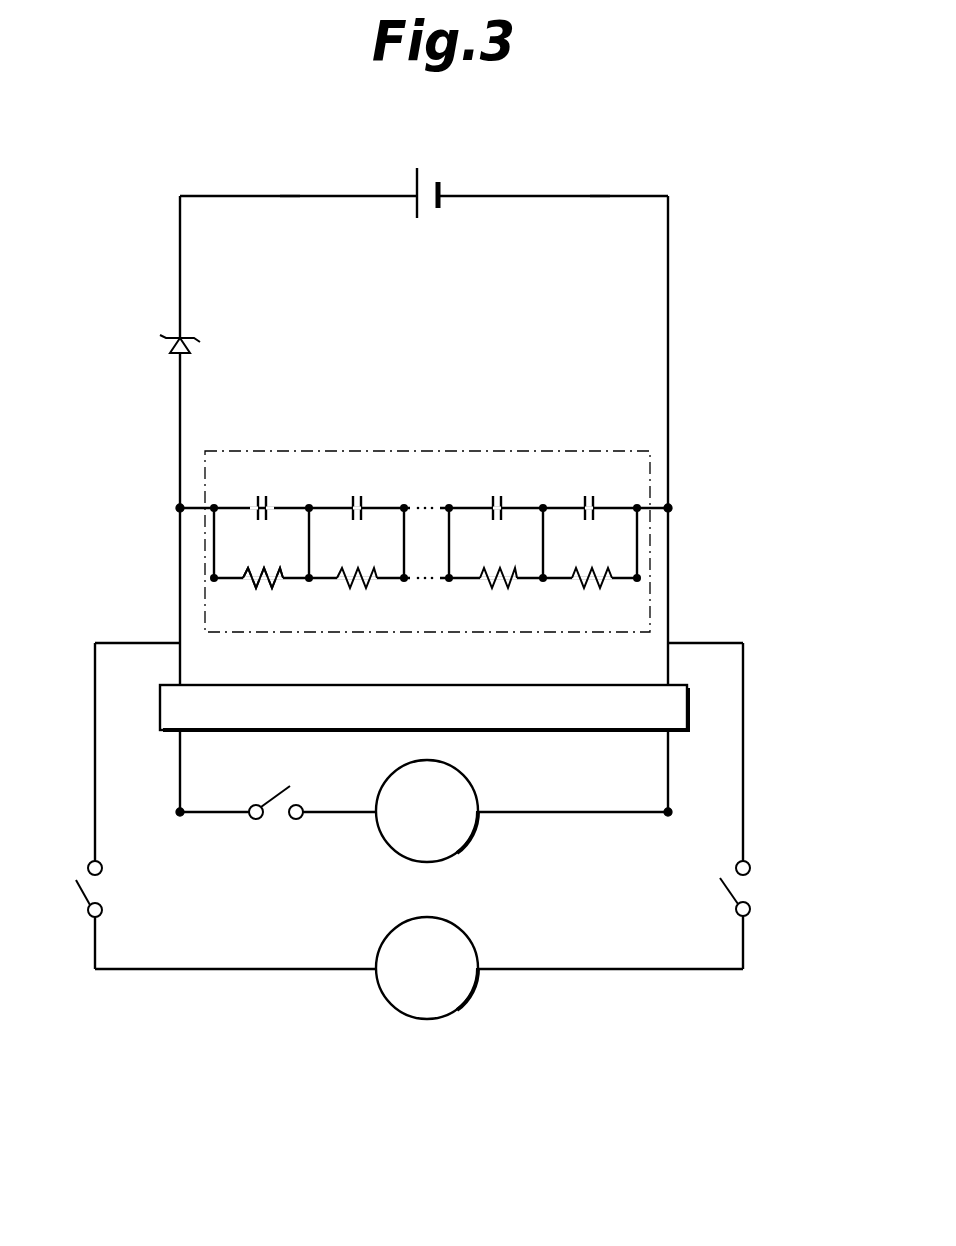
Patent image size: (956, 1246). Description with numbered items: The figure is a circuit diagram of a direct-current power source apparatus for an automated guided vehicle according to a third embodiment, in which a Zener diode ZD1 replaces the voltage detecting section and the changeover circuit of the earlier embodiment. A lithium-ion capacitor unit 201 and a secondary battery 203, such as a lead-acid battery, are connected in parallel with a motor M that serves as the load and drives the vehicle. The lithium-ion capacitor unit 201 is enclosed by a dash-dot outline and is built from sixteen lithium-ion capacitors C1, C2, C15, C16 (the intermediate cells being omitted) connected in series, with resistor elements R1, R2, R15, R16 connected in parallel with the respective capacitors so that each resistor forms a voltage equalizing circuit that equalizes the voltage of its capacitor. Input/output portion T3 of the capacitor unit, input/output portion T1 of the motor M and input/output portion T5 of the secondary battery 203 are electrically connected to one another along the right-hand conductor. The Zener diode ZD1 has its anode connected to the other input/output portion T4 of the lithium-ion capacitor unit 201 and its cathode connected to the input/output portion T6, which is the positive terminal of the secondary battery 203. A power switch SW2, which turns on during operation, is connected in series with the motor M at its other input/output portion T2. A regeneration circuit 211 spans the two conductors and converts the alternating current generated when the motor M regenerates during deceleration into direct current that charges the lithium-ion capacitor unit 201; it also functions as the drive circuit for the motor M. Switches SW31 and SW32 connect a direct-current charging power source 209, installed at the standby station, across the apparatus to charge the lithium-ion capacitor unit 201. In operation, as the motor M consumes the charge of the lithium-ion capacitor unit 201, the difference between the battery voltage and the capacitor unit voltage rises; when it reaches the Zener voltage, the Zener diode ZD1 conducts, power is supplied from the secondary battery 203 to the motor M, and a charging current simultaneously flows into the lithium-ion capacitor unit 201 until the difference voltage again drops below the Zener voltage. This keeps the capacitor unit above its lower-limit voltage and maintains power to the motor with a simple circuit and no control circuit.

The secondary battery 203 is at (470, 152).
The lithium-ion capacitor unit 201 is at (568, 450).
The regeneration circuit 211 is at (548, 684).
The direct-current charging power source 209 is at (420, 1018).
The input/output portion T1 is at (664, 816).
The input/output portion T2 is at (176, 810).
The input/output portion T3 is at (672, 513).
The input/output portion T4 is at (175, 512).
The input/output portion T5 is at (590, 192).
The input/output portion T6 is at (290, 192).
The Zener diode ZD1 is at (172, 350).
The lithium-ion capacitor C1 is at (263, 492).
The lithium-ion capacitor C2 is at (351, 492).
The lithium-ion capacitor C15 is at (496, 492).
The lithium-ion capacitor C16 is at (588, 492).
The resistor element R1 is at (263, 597).
The resistor element R2 is at (356, 597).
The resistor element R15 is at (496, 597).
The resistor element R16 is at (588, 597).
The power switch SW2 is at (284, 820).
The switch SW31 is at (100, 880).
The switch SW32 is at (752, 866).
The motor M is at (382, 830).